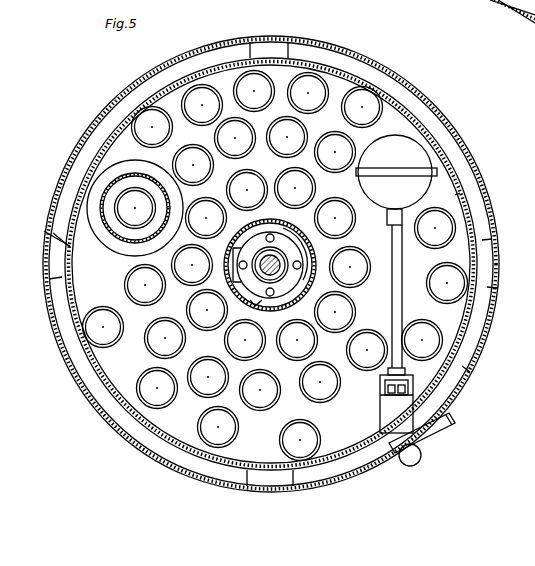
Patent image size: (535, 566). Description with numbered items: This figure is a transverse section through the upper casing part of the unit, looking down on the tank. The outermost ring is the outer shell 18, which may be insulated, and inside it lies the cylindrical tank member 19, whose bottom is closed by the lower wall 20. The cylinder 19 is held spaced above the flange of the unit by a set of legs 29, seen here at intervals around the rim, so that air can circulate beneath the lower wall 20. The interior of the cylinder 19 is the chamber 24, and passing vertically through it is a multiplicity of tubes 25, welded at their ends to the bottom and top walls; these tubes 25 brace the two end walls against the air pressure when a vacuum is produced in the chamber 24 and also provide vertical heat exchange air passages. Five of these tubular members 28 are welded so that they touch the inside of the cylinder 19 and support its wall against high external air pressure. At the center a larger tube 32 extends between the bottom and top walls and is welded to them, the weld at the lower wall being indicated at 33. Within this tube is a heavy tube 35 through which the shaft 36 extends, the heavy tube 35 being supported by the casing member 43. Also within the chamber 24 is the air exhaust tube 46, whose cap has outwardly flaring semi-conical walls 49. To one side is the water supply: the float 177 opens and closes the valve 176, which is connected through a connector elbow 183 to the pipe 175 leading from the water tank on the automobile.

The outer shell 18 is at (471, 153).
The cylindrical tank member 19 is at (439, 134).
The lower wall 20 is at (49, 232).
The chamber 24 is at (455, 195).
The tubes 25 is at (332, 212).
The tubular members 28 is at (152, 125).
The legs 29 is at (250, 42).
The larger tube 32 is at (316, 253).
The weld 33 is at (463, 366).
The heavy tube 35 is at (300, 293).
The shaft 36 is at (286, 227).
The casing member 43 is at (252, 298).
The air exhaust tube 46 is at (136, 187).
The semi-conical walls 49 is at (110, 234).
The pipe 175 is at (431, 440).
The valve 176 is at (384, 391).
The float 177 is at (408, 141).
The connector elbow 183 is at (415, 463).